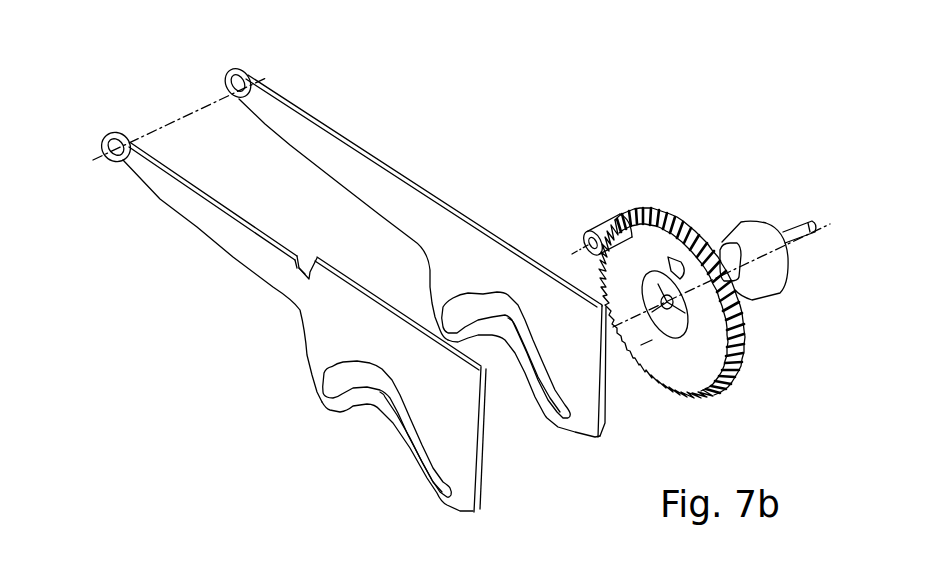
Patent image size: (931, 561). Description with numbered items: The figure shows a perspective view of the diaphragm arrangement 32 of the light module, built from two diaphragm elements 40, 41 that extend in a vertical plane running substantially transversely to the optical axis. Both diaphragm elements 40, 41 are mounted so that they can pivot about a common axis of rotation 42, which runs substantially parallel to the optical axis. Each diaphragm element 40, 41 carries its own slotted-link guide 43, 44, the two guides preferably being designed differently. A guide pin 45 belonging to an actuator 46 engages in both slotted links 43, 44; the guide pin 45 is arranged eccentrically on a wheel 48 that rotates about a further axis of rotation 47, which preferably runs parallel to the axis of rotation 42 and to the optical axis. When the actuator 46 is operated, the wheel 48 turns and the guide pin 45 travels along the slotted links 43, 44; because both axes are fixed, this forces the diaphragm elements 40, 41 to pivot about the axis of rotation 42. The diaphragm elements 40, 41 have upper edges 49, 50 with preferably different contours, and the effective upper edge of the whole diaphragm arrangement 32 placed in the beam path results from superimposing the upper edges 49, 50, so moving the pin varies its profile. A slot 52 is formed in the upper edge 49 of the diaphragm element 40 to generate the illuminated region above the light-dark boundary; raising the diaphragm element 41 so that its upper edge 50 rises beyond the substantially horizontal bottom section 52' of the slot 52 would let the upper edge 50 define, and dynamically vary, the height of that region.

The diaphragm arrangement 32 is at (505, 178).
The diaphragm element 40 is at (330, 332).
The diaphragm element 41 is at (410, 193).
The axis of rotation 42 is at (170, 122).
The slotted-link guide 43 is at (420, 472).
The slotted-link guide 44 is at (541, 408).
The guide pin 45 is at (613, 229).
The actuator 46 is at (698, 205).
The axis of rotation 47 is at (641, 345).
The wheel 48 is at (698, 368).
The upper edge 49 is at (248, 228).
The upper edge 50 is at (318, 133).
The slot 52 is at (312, 240).
The bottom section of the slot 52' is at (272, 304).